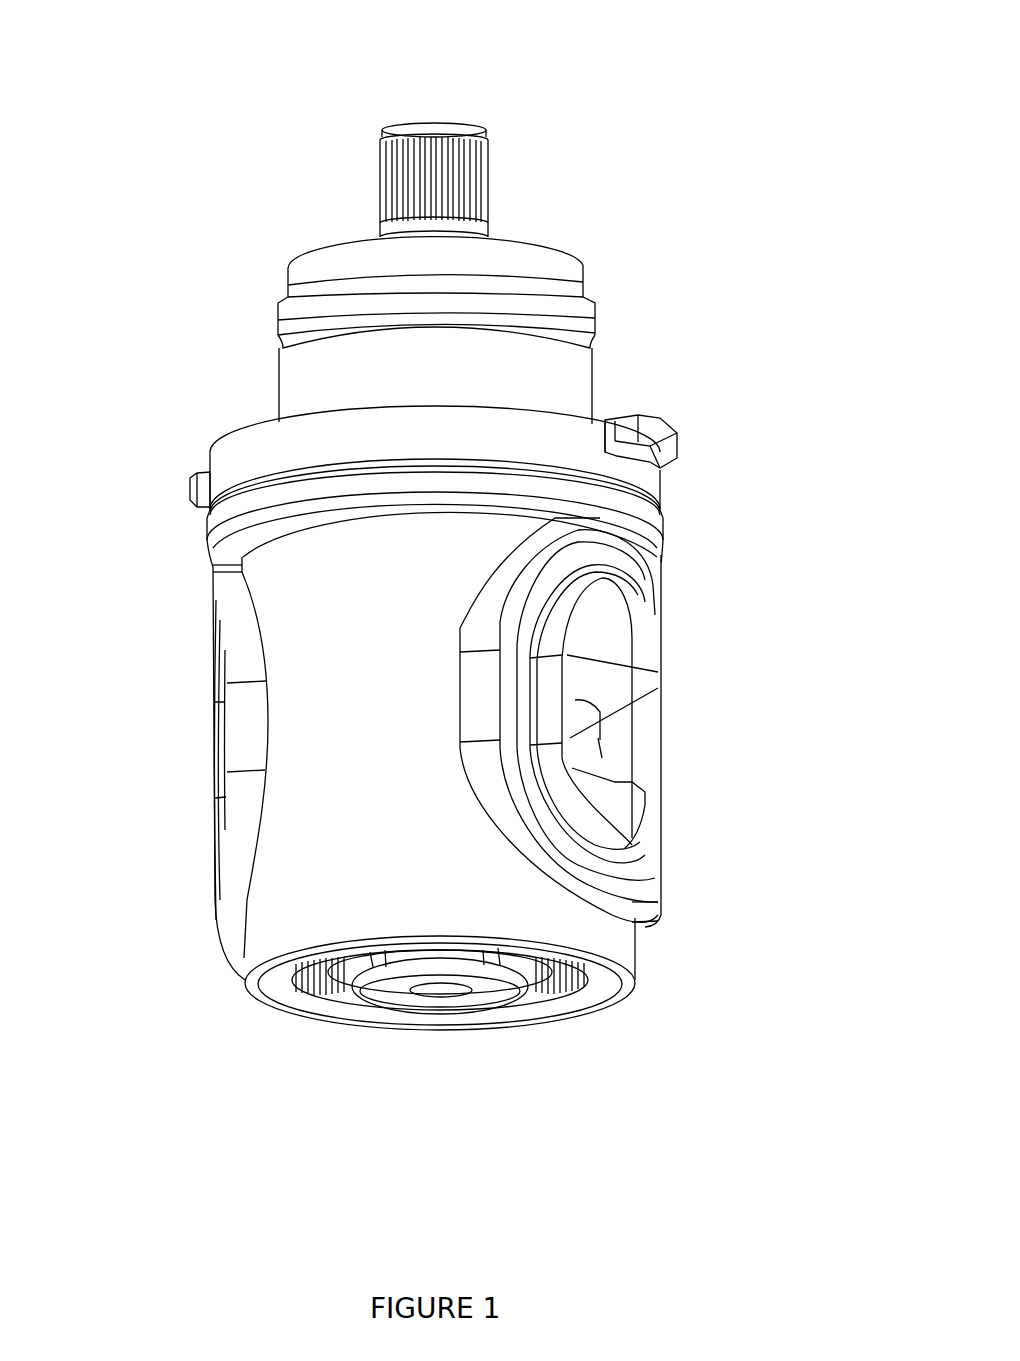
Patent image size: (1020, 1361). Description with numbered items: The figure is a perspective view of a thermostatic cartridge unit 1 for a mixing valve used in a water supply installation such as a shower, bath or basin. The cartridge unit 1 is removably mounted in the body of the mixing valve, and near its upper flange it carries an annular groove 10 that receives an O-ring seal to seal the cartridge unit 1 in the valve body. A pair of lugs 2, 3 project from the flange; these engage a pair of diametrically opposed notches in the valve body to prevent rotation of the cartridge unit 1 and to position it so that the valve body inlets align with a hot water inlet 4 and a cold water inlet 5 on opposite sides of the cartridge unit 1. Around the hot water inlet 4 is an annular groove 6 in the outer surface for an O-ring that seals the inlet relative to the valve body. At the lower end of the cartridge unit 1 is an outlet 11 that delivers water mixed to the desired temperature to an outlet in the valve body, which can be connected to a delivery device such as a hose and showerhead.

The thermostatic cartridge unit 1 is at (598, 124).
The lug 2 is at (678, 433).
The lug 3 is at (190, 487).
The hot water inlet 4 is at (645, 757).
The cold water inlet 5 is at (213, 752).
The annular groove 6 is at (658, 878).
The annular groove 10 is at (667, 515).
The outlet 11 is at (475, 998).